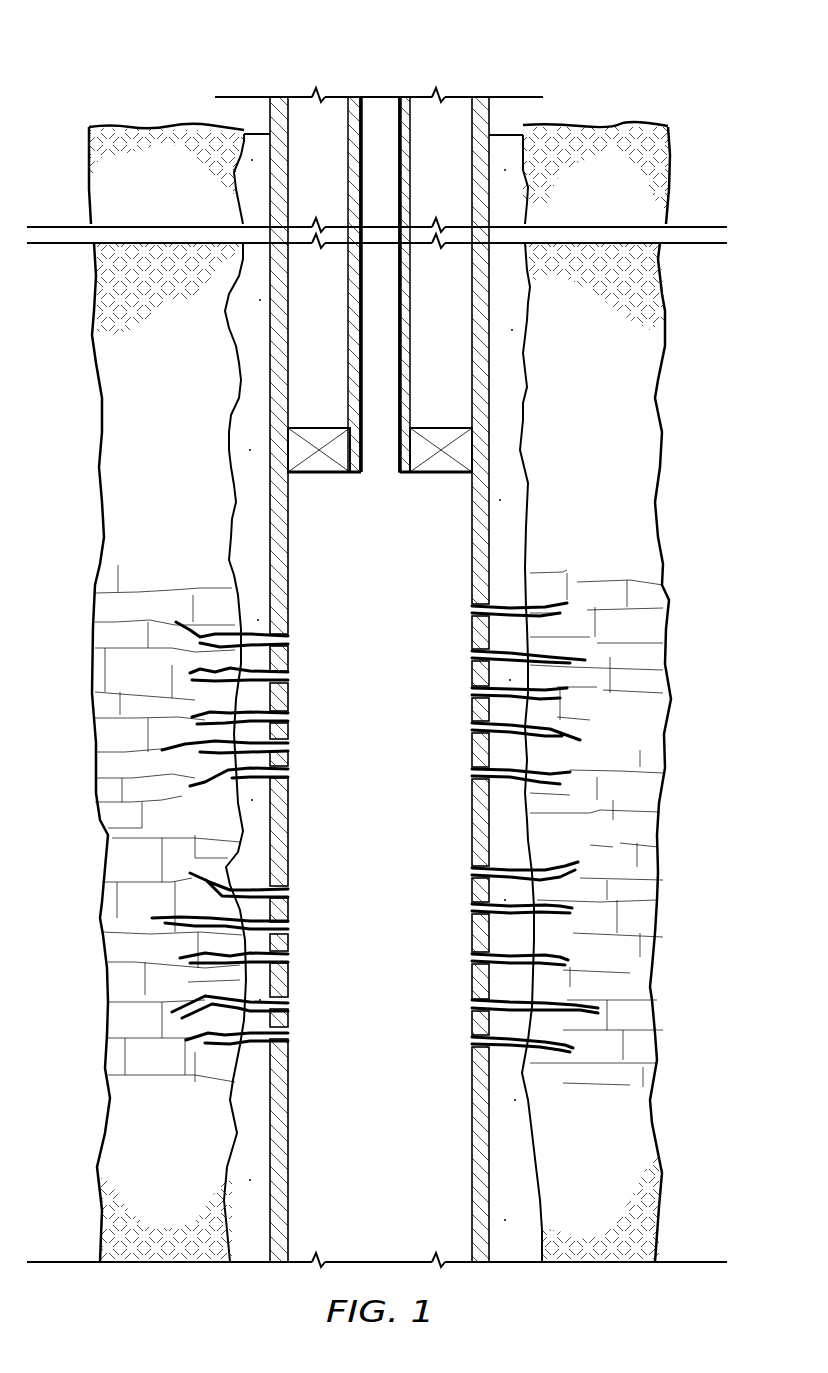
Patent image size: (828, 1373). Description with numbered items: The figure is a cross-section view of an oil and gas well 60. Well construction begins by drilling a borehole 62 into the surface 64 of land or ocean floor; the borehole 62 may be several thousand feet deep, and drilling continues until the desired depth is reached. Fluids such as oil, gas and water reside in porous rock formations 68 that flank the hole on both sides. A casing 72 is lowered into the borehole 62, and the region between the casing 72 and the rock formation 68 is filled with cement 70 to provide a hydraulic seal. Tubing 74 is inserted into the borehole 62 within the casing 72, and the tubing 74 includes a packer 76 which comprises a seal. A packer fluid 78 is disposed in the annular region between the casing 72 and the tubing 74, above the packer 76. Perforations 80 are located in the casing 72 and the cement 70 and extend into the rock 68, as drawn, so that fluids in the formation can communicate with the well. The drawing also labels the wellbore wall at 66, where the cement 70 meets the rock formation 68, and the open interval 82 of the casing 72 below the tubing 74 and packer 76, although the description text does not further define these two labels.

The oil and gas well 60 is at (72, 96).
The borehole 62 is at (372, 66).
The surface 64 is at (169, 126).
The wellbore 66 is at (241, 830).
The rock formation 68 is at (152, 690).
The cement 70 is at (520, 485).
The casing 72 is at (478, 575).
The tubing 74 is at (403, 390).
The packer 76 is at (320, 470).
The packer fluid 78 is at (333, 357).
The perforations 80 is at (580, 714).
The production interval 82 is at (377, 490).